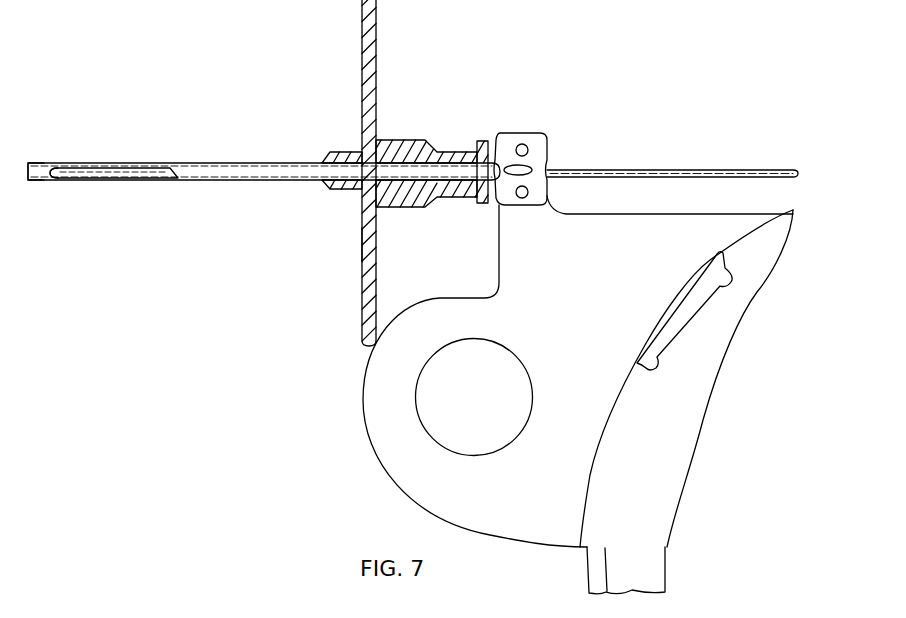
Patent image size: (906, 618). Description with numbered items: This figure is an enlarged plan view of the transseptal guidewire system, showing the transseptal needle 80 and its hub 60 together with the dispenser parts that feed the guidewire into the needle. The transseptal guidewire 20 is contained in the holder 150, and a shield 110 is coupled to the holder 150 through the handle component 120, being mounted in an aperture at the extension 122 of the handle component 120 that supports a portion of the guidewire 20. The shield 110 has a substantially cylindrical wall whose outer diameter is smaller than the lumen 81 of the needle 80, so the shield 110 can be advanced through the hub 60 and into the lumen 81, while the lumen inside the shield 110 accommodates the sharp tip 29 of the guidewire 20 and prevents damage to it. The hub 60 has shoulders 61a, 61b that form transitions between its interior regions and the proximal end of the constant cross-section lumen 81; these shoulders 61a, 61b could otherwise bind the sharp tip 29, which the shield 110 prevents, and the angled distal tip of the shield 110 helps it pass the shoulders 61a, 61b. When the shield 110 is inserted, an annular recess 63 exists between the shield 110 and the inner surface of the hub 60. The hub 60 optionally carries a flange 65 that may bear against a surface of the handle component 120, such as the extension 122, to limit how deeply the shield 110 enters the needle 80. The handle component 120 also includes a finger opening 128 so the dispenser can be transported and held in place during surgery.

The transseptal guidewire 20 is at (688, 168).
The sharp tip 29 is at (52, 172).
The hub 60 is at (399, 76).
The shoulder 61a is at (333, 160).
The shoulder 61b is at (427, 139).
The annular recess 63 is at (483, 140).
The flange 65 is at (361, 244).
The transseptal needle 80 is at (148, 164).
The lumen 81 is at (32, 172).
The shield 110 is at (238, 181).
The handle component 120 is at (702, 418).
The extension 122 is at (548, 158).
The finger opening 128 is at (428, 415).
The holder 150 is at (588, 574).